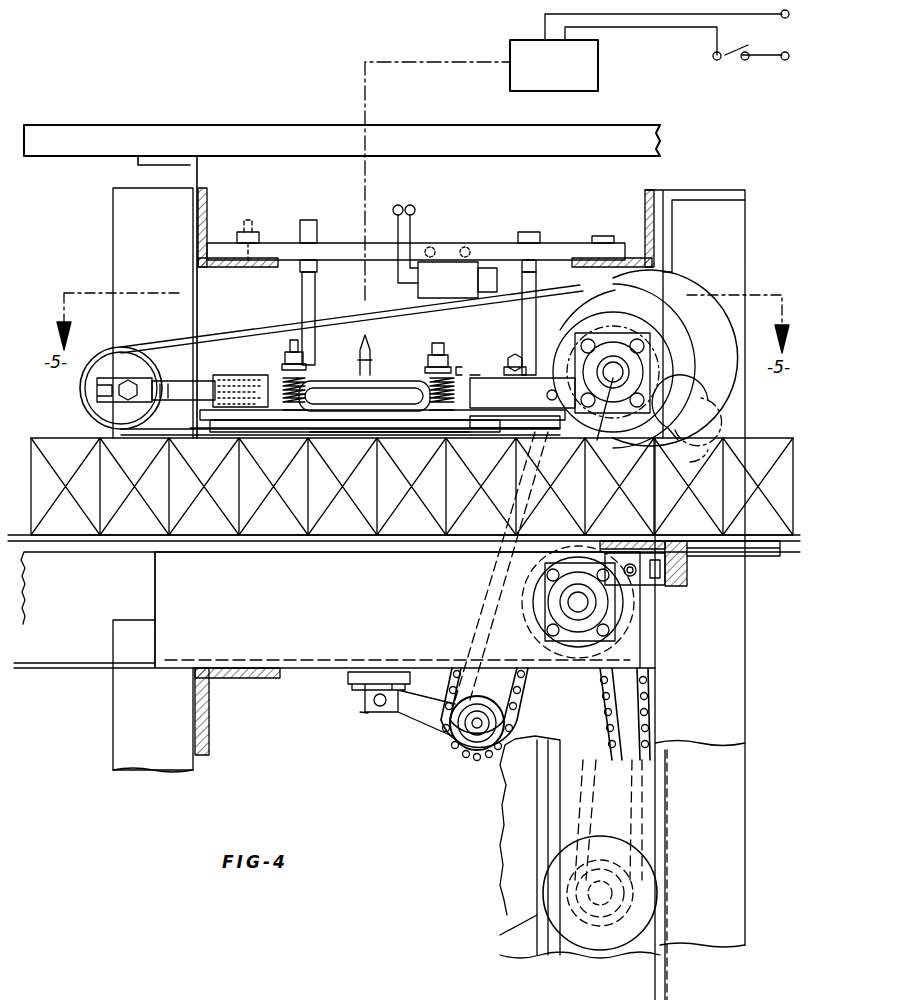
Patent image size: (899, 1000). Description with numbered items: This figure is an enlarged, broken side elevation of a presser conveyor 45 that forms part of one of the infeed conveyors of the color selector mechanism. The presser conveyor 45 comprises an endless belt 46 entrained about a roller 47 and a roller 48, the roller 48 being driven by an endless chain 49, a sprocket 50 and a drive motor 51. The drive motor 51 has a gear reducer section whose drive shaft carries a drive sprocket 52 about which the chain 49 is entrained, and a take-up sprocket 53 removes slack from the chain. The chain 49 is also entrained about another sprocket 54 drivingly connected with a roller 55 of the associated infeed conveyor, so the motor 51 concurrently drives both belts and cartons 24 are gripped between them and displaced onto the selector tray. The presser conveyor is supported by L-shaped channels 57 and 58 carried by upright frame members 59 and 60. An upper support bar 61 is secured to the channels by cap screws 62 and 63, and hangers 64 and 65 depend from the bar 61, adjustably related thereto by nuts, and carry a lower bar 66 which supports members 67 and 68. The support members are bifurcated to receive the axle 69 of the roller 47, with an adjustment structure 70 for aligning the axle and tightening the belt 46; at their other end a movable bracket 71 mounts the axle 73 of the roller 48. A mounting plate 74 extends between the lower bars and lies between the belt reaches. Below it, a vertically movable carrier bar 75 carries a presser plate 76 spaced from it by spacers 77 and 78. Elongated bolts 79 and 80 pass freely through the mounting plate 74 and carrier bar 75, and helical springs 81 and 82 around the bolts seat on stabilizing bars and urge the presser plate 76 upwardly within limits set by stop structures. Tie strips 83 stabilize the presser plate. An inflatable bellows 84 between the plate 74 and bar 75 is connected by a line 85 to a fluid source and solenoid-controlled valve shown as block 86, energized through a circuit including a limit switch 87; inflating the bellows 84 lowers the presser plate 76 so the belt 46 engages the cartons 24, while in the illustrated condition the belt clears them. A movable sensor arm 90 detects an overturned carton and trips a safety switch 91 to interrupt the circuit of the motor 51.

The carton 24 is at (158, 514).
The presser conveyor 45 is at (78, 400).
The endless belt 46 is at (252, 336).
The roller 47 is at (122, 352).
The roller 48 is at (566, 333).
The endless chain 49 is at (486, 590).
The sprocket 50 is at (650, 372).
The drive motor 51 is at (500, 850).
The drive sprocket 52 is at (596, 930).
The take-up sprocket 53 is at (470, 755).
The sprocket 54 is at (575, 647).
The roller 55 is at (522, 572).
The L-shaped channel 57 is at (208, 211).
The L-shaped channel 58 is at (644, 196).
The upright frame member 59 is at (148, 766).
The upright frame member 60 is at (745, 708).
The upper support bar 61 is at (325, 236).
The cap screw 62 is at (254, 232).
The cap screw 63 is at (590, 236).
The hanger 64 is at (300, 302).
The hanger 65 is at (520, 303).
The lower bar 66 is at (492, 394).
The support member 67 is at (240, 375).
The support member 68 is at (478, 372).
The axle 69 is at (138, 382).
The adjustment structure 70 is at (178, 382).
The movable bracket 71 is at (552, 390).
The axle 73 is at (596, 444).
The mounting plate 74 is at (390, 370).
The carrier bar 75 is at (268, 422).
The presser plate 76 is at (190, 436).
The spacer 77 is at (220, 430).
The spacer 78 is at (500, 428).
The elongated bolt 79 is at (283, 348).
The elongated bolt 80 is at (438, 343).
The helical spring 81 is at (282, 398).
The helical spring 82 is at (446, 412).
The tie strip 83 is at (400, 432).
The inflatable bellows 84 is at (340, 420).
The line 85 is at (364, 95).
The block 86 is at (560, 92).
The limit switch 87 is at (732, 62).
The sensor arm 90 is at (692, 390).
The safety switch 91 is at (446, 265).